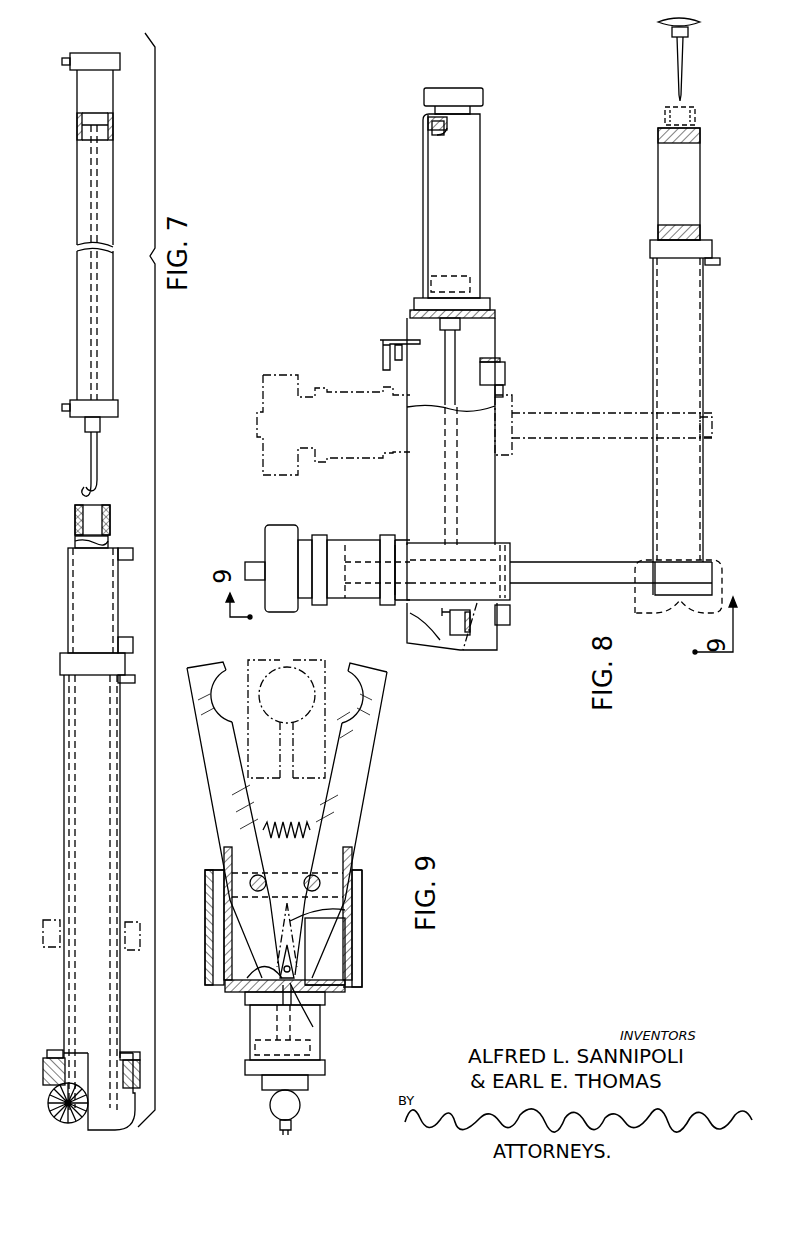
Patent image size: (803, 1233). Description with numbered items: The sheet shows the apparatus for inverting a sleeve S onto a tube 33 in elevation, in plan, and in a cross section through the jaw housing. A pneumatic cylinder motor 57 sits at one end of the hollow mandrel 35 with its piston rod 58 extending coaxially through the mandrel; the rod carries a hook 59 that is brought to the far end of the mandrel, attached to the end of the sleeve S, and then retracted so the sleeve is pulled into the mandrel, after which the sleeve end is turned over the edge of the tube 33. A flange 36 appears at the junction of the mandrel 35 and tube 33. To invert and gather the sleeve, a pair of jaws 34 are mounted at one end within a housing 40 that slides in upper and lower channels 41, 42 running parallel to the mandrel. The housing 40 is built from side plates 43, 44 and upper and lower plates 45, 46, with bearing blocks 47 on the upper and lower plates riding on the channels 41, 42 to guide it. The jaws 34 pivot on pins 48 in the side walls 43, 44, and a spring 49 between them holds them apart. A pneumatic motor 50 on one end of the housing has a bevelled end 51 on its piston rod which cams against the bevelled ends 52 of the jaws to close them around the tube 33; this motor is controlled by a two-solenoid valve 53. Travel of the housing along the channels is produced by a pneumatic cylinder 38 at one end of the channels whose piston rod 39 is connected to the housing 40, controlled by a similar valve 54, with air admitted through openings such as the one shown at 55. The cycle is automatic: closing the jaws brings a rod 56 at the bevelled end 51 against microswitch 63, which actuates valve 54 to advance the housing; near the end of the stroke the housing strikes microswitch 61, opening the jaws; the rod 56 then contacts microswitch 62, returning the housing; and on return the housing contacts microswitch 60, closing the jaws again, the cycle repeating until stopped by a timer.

In FIG. 7, the tube 33 is at (72, 830).
In FIG. 8, the tube 33 is at (657, 463).
In FIG. 7, the jaws 34 is at (47, 925).
In FIG. 9, the jaws 34 is at (220, 770).
In FIG. 8, the jaws 34 is at (537, 580).
In FIG. 7, the hollow mandrel 35 is at (72, 617).
In FIG. 8, the hollow mandrel 35 is at (662, 177).
In FIG. 7, the flange 36 is at (60, 665).
In FIG. 8, the flange 36 is at (653, 248).
In FIG. 8, the pneumatic cylinder 38 is at (425, 200).
In FIG. 8, the piston rod 39 is at (457, 410).
In FIG. 9, the housing 40 is at (210, 860).
In FIG. 8, the housing 40 is at (517, 548).
In FIG. 9, the upper channel 41 is at (213, 927).
In FIG. 8, the upper channel 41 is at (497, 480).
In FIG. 9, the lower channel 42 is at (360, 927).
In FIG. 8, the lower channel 42 is at (413, 330).
In FIG. 8, the side plate 43 is at (464, 476).
In FIG. 9, the side plate 44 is at (311, 954).
In FIG. 8, the side plate 44 is at (487, 645).
In FIG. 9, the upper plate 45 is at (225, 990).
In FIG. 9, the lower plate 46 is at (360, 987).
In FIG. 9, the bearing blocks 47 is at (362, 885).
In FIG. 9, the pins 48 is at (256, 875).
In FIG. 9, the spring 49 is at (286, 822).
In FIG. 9, the pneumatic motor 50 is at (257, 1040).
In FIG. 8, the pneumatic motor 50 is at (355, 542).
In FIG. 9, the bevelled end 51 is at (247, 990).
In FIG. 9, the bevelled ends 52 is at (268, 965).
In FIG. 9, the solenoid actuated valve 53 is at (270, 1103).
In FIG. 8, the solenoid actuated valve 53 is at (272, 540).
In FIG. 8, the valve 54 is at (423, 97).
In FIG. 8, the opening 55 is at (440, 127).
In FIG. 9, the rod 56 is at (318, 1014).
In FIG. 8, the rod 56 is at (403, 533).
In FIG. 7, the pneumatic cylinder motor 57 is at (72, 305).
In FIG. 8, the pneumatic cylinder motor 57 is at (660, 22).
In FIG. 7, the piston rod 58 is at (90, 452).
In FIG. 8, the piston rod 58 is at (683, 63).
In FIG. 7, the hook 59 is at (86, 491).
In FIG. 8, the hook 59 is at (677, 93).
In FIG. 8, the microswitch 60 is at (505, 625).
In FIG. 8, the microswitch 61 is at (497, 370).
In FIG. 8, the microswitch 62 is at (383, 360).
In FIG. 8, the microswitch 63 is at (458, 635).
In FIG. 7, the sleeve S is at (74, 519).
In FIG. 8, the sleeve S is at (662, 124).